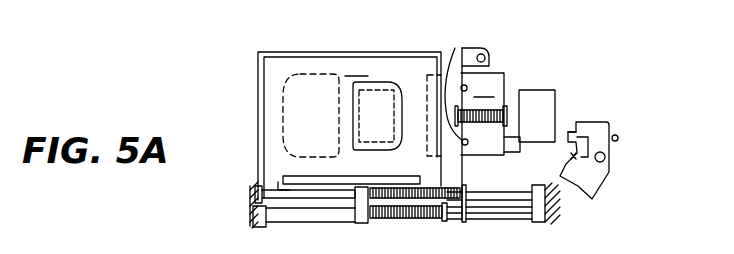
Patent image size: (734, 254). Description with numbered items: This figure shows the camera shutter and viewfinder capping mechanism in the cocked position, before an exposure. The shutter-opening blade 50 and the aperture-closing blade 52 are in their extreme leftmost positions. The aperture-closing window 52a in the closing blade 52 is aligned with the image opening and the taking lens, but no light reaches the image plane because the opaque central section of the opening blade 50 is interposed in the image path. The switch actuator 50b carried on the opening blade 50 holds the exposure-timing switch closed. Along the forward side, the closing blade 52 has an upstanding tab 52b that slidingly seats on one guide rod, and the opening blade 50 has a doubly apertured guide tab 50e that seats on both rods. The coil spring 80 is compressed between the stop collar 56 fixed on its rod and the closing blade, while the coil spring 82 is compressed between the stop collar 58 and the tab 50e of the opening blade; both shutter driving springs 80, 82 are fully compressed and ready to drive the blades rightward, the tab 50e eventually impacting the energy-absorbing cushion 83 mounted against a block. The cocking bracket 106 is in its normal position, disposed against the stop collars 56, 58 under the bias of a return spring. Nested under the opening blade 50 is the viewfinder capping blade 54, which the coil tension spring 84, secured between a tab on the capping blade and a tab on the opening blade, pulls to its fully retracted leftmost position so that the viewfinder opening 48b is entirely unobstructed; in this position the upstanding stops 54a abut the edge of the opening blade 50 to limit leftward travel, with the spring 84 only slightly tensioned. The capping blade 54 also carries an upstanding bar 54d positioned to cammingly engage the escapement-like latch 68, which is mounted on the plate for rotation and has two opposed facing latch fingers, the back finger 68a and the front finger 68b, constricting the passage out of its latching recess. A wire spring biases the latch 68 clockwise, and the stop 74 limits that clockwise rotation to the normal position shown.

The shutter-opening blade 50 is at (258, 150).
The switch-actuator 50b is at (487, 58).
The guide tab 50e is at (468, 222).
The aperture-closing blade 52 is at (356, 66).
The aperture-closing window 52a is at (400, 103).
The upstanding tab 52b is at (256, 184).
The viewfinder capping blade 54 is at (482, 134).
The upstanding stops 54a is at (457, 44).
The upstanding bar 54d is at (513, 154).
The stop collar 56 is at (358, 224).
The stop collar 58 is at (378, 190).
The latch 68 is at (607, 178).
The back latch finger 68a is at (571, 133).
The front latch finger 68b is at (571, 156).
The stop 74 is at (619, 136).
The coil spring 80 is at (378, 220).
The coil spring 82 is at (412, 219).
The energy-absorbing cushion 83 is at (536, 223).
The coil tension spring 84 is at (483, 125).
The cocking bracket 106 is at (382, 186).
The viewfinder opening 48b is at (545, 90).